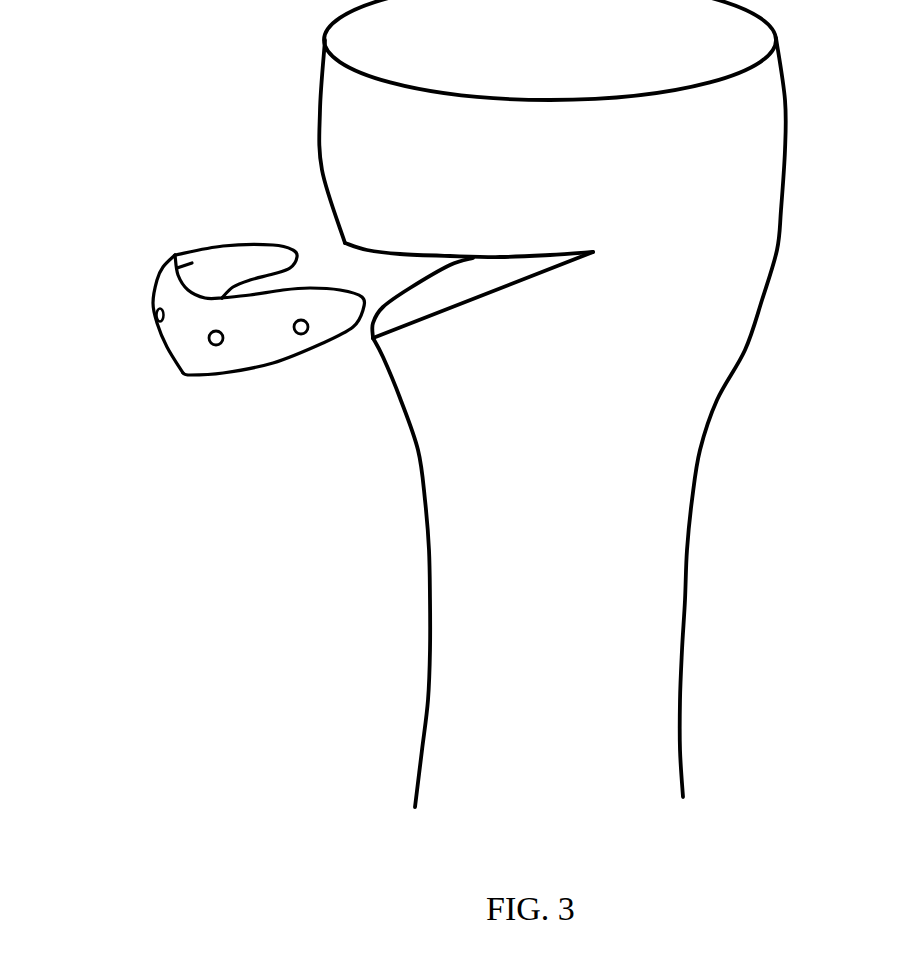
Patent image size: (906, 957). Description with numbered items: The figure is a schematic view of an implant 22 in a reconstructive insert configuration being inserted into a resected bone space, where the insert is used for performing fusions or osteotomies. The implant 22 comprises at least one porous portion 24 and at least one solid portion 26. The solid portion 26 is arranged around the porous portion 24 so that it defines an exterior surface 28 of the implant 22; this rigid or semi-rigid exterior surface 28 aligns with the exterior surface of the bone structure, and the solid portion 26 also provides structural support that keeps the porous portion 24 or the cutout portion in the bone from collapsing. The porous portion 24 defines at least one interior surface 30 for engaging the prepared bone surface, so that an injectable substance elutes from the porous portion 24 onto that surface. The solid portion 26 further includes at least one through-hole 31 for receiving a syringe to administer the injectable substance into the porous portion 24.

The implant 22 is at (139, 292).
The porous portion 24 is at (230, 257).
The solid portion 26 is at (165, 350).
The exterior surface 28 is at (203, 355).
The interior surface 30 is at (203, 280).
The through-hole 31 is at (298, 337).